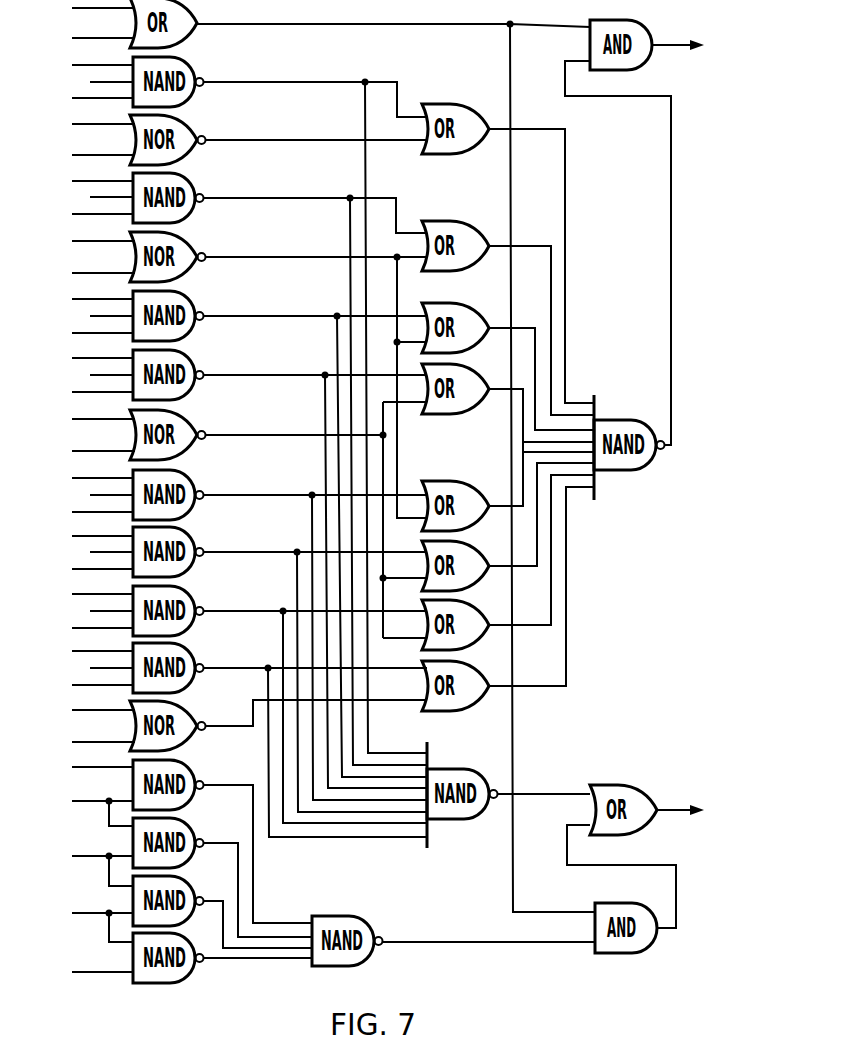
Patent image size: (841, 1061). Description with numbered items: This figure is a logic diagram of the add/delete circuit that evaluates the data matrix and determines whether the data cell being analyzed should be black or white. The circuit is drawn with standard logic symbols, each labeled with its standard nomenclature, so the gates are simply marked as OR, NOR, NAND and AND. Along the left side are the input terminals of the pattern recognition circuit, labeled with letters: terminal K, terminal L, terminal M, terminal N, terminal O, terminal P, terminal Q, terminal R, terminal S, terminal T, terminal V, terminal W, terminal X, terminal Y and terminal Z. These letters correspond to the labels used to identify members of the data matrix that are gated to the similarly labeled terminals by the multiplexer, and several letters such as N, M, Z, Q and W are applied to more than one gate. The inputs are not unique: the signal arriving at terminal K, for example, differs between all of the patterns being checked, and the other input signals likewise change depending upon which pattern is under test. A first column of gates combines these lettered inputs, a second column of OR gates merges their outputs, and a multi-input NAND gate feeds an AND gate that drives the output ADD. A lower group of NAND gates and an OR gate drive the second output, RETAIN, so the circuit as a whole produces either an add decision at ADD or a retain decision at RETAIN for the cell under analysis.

The input terminal O is at (96, 11).
The input terminal P is at (96, 38).
The input terminal L is at (95, 65).
The input terminal M is at (95, 446).
The input terminal N is at (95, 432).
The input terminal K is at (96, 124).
The input terminal W is at (96, 448).
The input terminal Y is at (95, 421).
The input terminal V is at (96, 273).
The input terminal X is at (95, 414).
The input terminal Z is at (96, 602).
The input terminal Q is at (95, 702).
The input terminal R is at (95, 791).
The input terminal S is at (95, 685).
The input terminal T is at (96, 710).
The add output ADD is at (693, 45).
The retain output RETAIN is at (709, 810).